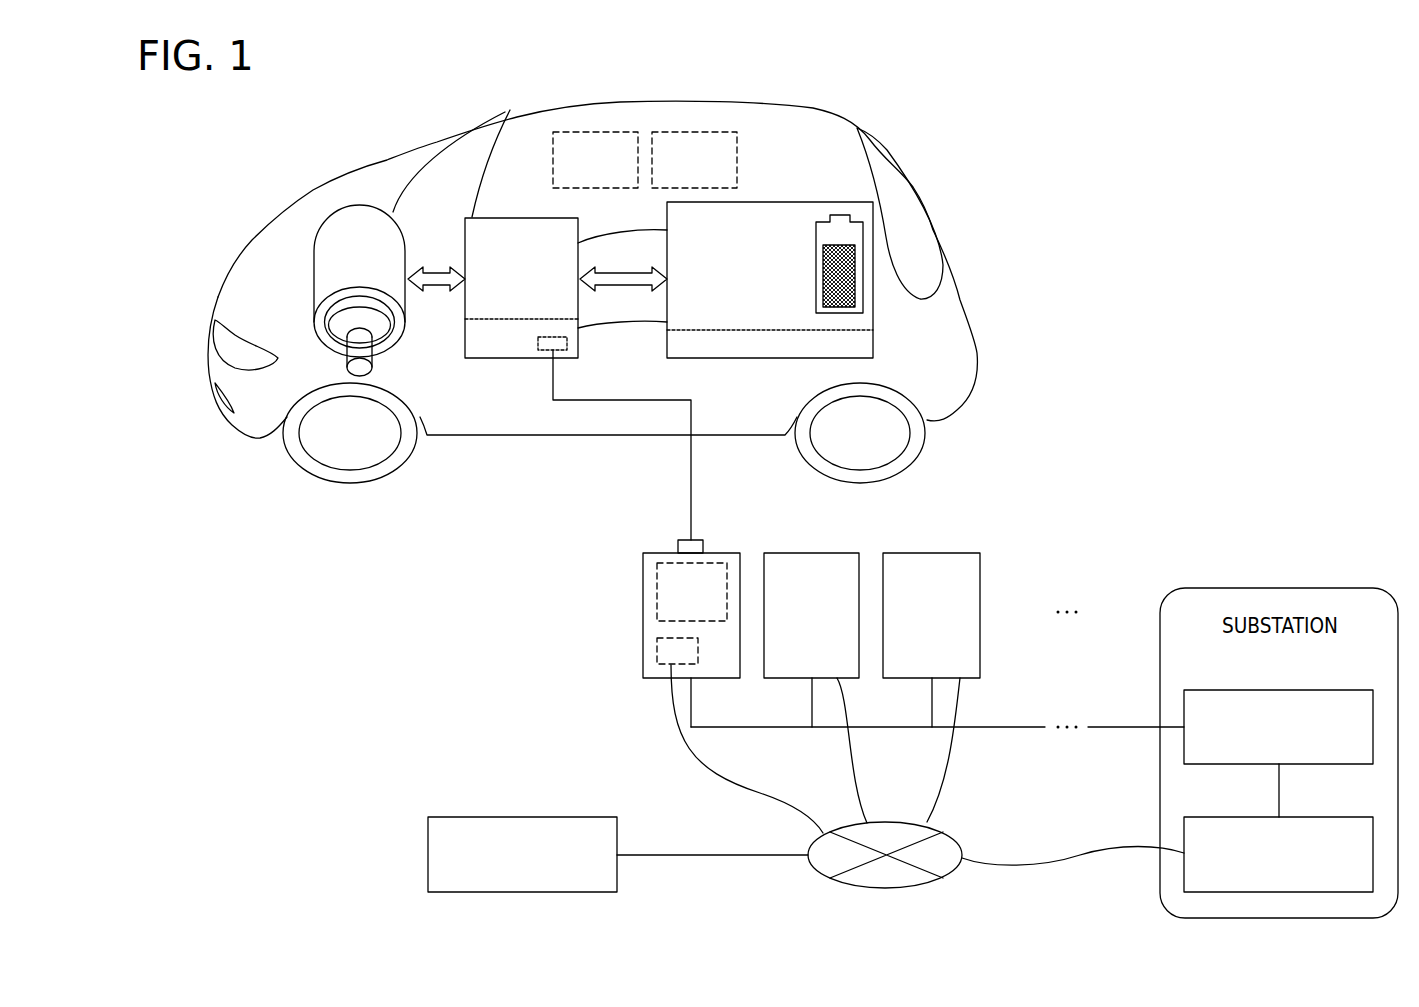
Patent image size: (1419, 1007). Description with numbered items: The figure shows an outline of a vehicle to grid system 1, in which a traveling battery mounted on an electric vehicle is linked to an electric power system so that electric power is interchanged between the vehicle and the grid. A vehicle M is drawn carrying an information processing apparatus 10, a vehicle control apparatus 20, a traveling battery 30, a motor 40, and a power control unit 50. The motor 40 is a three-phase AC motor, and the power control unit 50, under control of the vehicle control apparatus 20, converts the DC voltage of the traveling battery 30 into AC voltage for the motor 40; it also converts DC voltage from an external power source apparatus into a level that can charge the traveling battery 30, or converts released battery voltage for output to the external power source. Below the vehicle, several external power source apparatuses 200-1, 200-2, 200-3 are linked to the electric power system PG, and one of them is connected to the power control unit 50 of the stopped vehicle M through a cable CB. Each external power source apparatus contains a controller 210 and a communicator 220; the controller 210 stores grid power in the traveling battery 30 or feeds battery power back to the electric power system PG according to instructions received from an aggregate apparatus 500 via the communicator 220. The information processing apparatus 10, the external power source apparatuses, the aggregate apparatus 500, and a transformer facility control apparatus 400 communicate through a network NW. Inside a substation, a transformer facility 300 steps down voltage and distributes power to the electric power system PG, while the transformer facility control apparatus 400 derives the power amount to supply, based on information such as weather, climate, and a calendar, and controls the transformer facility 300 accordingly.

The V2G system 1 is at (1247, 246).
The vehicle M is at (943, 228).
The information processing apparatus 10 is at (592, 132).
The vehicle control apparatus 20 is at (688, 132).
The traveling battery 30 is at (797, 202).
The motor 40 is at (358, 205).
The power control unit (PCU) 50 is at (522, 218).
The cable CB is at (691, 487).
The external power source apparatus 200-1 is at (720, 552).
The external power source apparatus 200-2 is at (840, 552).
The external power source apparatus 200-3 is at (960, 552).
The controller 210 is at (657, 590).
The communicator 220 is at (657, 645).
The electric power system PG is at (1130, 727).
The network NW is at (885, 888).
The aggregate apparatus 500 is at (553, 817).
The transformer facility 300 is at (1307, 690).
The transformer facility control apparatus 400 is at (1307, 817).